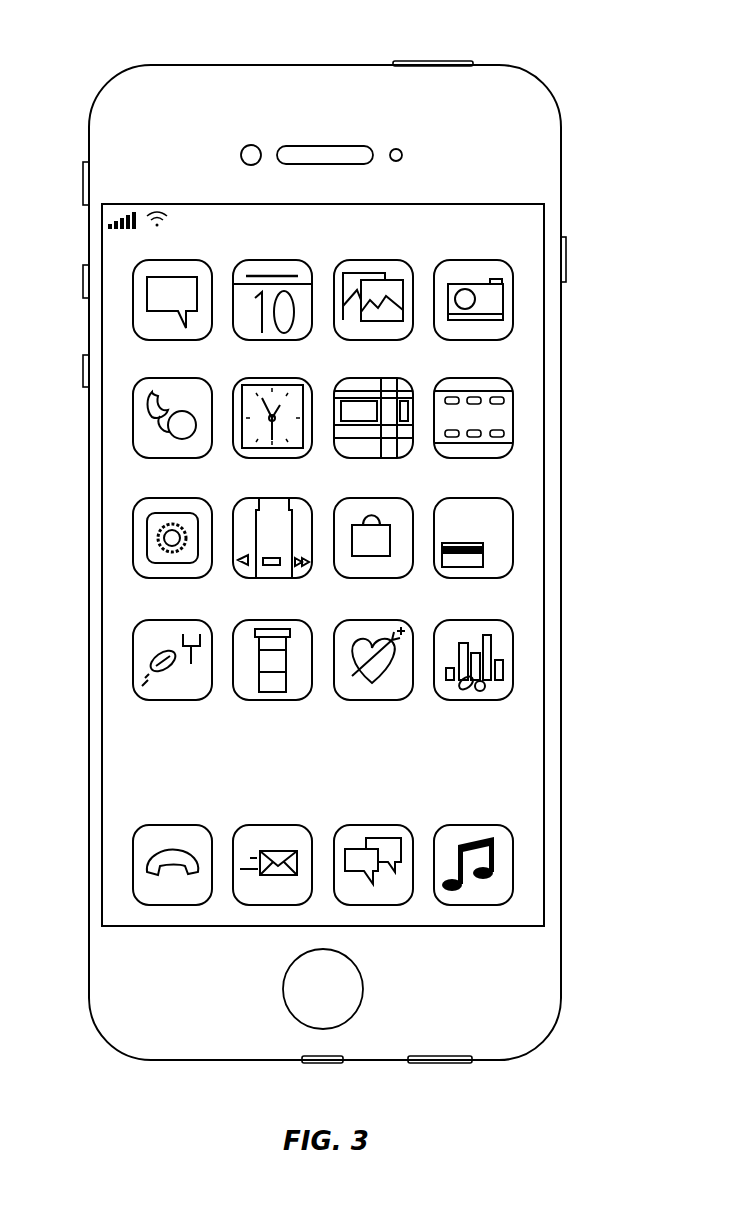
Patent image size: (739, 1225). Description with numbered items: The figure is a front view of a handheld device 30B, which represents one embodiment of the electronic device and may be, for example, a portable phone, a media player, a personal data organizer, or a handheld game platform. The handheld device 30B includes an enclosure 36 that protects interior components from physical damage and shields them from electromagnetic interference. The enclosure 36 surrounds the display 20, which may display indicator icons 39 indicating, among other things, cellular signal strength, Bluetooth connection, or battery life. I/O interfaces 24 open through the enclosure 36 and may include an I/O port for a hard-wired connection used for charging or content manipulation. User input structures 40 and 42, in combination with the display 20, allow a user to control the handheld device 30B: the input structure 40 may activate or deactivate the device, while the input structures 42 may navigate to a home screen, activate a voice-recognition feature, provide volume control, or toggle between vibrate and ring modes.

The handheld device 30B is at (92, 60).
The enclosure 36 is at (562, 156).
The input structure 40 is at (432, 61).
The input structures 42 is at (83, 182).
The I/O interfaces 24 is at (322, 1065).
The display 20 is at (545, 613).
The indicator icons 39 is at (156, 208).